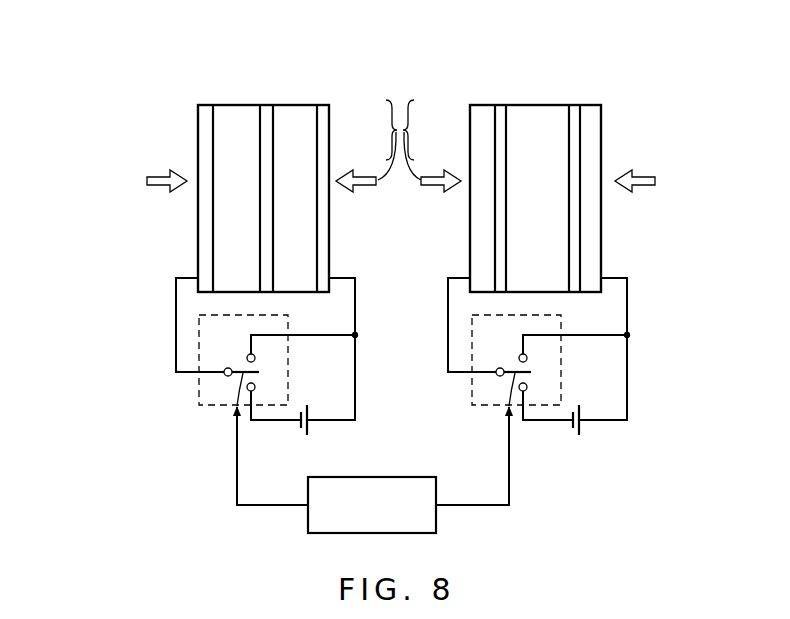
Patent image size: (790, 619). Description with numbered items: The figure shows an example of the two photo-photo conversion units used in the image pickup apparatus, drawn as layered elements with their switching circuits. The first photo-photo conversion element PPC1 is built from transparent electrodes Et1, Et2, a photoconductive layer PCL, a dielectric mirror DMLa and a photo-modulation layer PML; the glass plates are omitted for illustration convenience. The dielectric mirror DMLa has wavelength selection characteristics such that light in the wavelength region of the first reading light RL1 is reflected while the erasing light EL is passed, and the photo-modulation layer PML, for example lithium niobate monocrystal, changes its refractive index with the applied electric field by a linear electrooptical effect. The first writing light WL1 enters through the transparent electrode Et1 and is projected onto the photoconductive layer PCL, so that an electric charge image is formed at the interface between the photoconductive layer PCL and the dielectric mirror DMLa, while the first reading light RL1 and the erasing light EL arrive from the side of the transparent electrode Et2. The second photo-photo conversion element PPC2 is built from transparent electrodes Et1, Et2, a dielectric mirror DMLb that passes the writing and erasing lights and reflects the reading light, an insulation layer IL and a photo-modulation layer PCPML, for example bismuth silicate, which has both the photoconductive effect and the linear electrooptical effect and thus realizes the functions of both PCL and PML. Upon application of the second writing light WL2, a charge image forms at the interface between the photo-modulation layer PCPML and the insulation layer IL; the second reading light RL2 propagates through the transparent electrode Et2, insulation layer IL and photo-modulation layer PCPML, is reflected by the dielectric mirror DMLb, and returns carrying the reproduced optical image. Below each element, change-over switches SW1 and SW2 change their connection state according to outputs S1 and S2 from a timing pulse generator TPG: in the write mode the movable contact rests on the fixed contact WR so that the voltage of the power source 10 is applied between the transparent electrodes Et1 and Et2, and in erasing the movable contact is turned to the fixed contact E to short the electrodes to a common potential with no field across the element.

The first photo-photo conversion element PPC1 is at (163, 98).
The photoconductive layer PCL is at (227, 112).
The dielectric mirror DMLa is at (267, 112).
The photo-modulation layer PML is at (295, 110).
The first writing light WL1 is at (155, 178).
The first reading light RL1 is at (366, 146).
The erasing light EL is at (397, 147).
The second writing light WL2 is at (434, 146).
The second reading light RL2 is at (645, 178).
The transparent electrode Et1 is at (198, 240).
The transparent electrode Et2 is at (329, 240).
The second photo-photo conversion element PPC2 is at (613, 108).
The dielectric mirror DMLb is at (500, 112).
The photo-modulation layer PCPML is at (533, 113).
The insulation layer IL is at (572, 110).
The change-over switch SW1 is at (270, 315).
The change-over switch SW2 is at (540, 315).
The fixed contact E is at (248, 354).
The fixed contact WR is at (256, 385).
The power source 10 is at (307, 432).
The output S1 is at (266, 436).
The output S2 is at (483, 436).
The timing pulse generator TPG is at (372, 505).